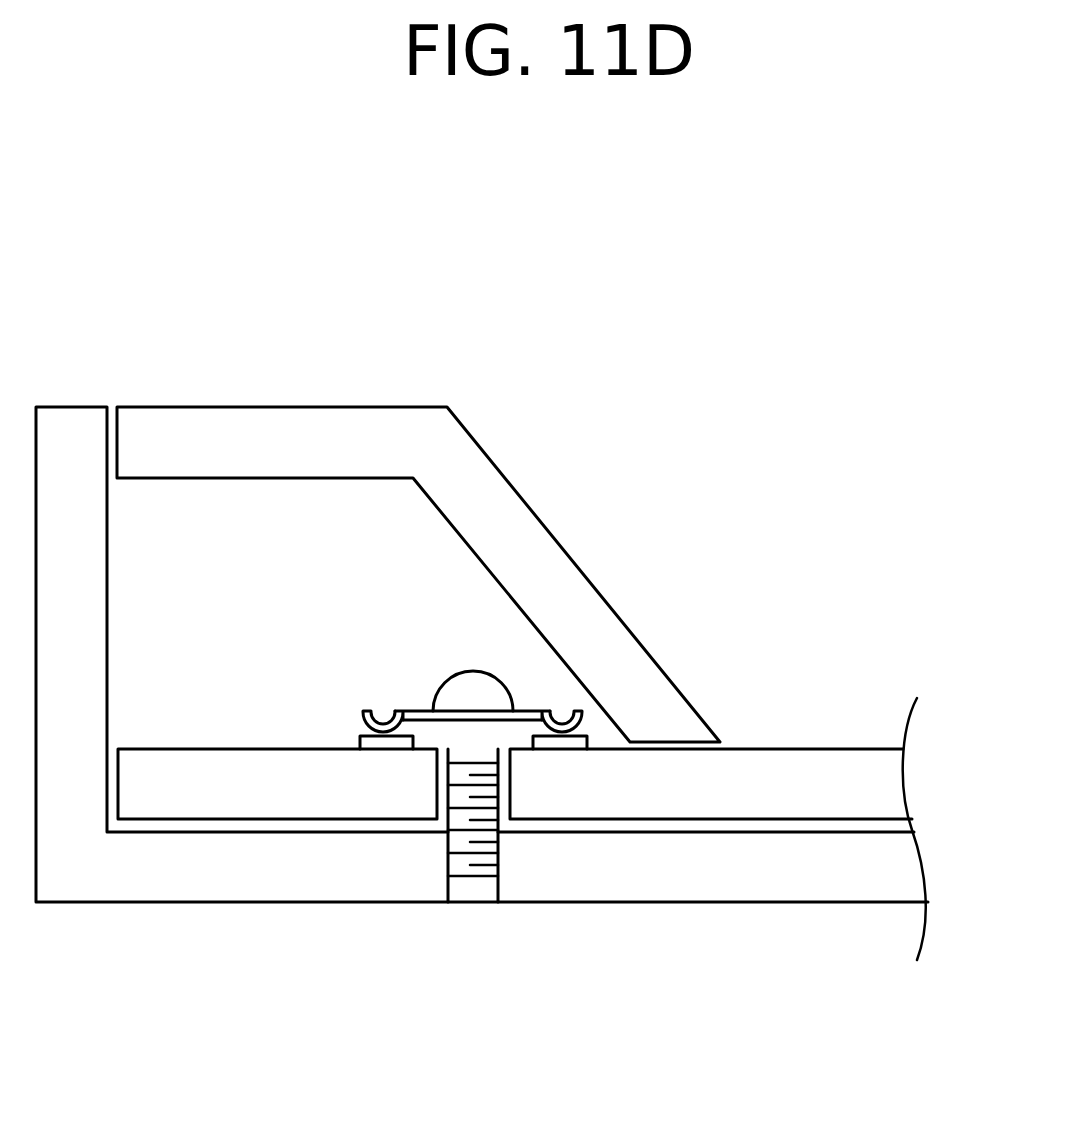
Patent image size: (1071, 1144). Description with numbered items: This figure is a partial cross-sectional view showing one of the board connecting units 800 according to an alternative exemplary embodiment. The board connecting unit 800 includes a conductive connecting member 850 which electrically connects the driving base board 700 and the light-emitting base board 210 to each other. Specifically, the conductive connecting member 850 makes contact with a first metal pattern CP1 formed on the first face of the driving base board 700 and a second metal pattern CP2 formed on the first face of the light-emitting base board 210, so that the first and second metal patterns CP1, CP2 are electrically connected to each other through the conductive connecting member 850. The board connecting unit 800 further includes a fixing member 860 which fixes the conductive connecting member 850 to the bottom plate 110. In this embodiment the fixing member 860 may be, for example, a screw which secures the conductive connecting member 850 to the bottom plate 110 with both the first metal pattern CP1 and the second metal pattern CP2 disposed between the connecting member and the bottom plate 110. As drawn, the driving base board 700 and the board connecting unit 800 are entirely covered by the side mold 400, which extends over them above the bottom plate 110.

The bottom plate 110 is at (144, 883).
The side mold 400 is at (250, 430).
The driving base board 700 is at (258, 787).
The light-emitting base board 210 is at (718, 788).
The first metal pattern CP1 is at (385, 742).
The second metal pattern CP2 is at (560, 748).
The board connecting unit 800 is at (597, 488).
The conductive connecting member 850 is at (535, 712).
The fixing member 860 is at (475, 685).